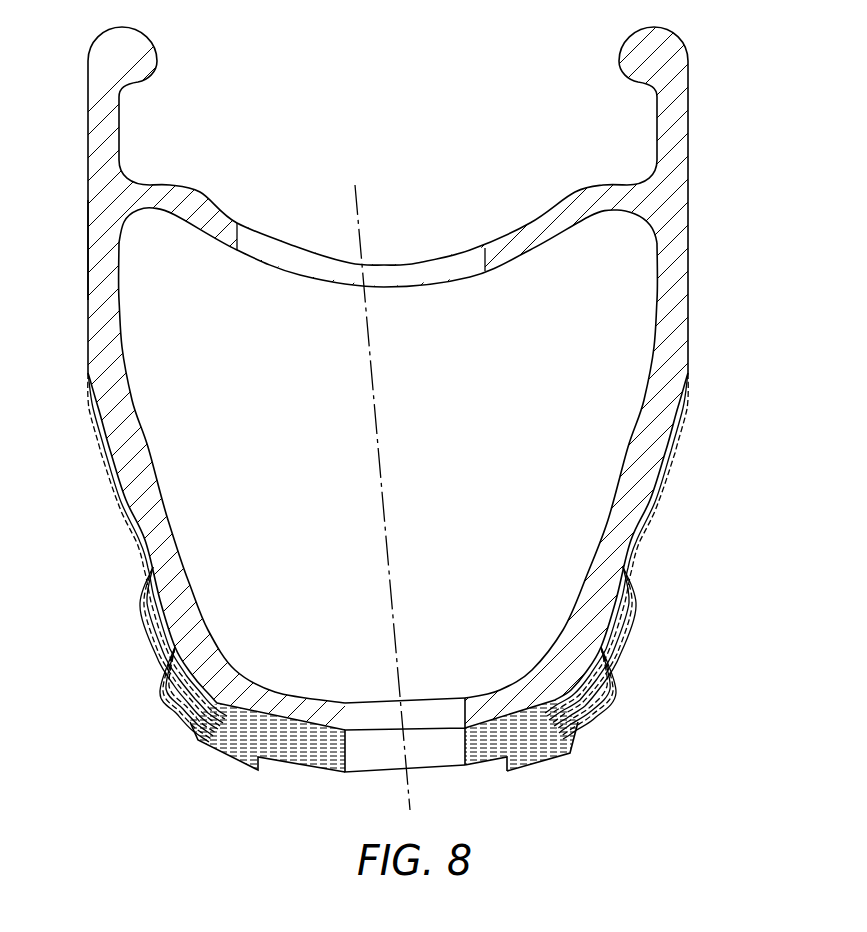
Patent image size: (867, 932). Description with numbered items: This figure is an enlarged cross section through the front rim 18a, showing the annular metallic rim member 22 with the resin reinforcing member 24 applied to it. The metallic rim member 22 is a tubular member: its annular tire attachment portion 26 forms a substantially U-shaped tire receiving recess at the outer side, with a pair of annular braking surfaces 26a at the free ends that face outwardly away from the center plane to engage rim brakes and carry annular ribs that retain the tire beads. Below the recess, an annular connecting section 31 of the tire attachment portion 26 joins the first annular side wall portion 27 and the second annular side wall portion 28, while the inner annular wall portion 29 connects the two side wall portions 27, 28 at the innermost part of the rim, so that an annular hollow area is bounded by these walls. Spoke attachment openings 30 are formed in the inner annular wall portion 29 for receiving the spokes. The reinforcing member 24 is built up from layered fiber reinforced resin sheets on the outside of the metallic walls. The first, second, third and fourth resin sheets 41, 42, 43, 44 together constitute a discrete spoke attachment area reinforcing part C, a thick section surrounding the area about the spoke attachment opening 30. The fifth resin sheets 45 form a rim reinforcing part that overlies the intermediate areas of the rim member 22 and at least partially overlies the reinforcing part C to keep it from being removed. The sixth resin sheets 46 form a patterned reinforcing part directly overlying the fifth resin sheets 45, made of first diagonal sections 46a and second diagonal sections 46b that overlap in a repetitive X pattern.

The rim 18a is at (762, 355).
The annular metallic rim member 22 is at (692, 152).
The resin reinforcing member 24 is at (704, 409).
The annular tire attachment portion 26 is at (120, 120).
The annular braking surfaces 26a is at (88, 264).
The first annular side wall portion 27 is at (150, 466).
The second annular side wall portion 28 is at (628, 448).
The inner annular wall portion 29 is at (331, 700).
The spoke attachment openings 30 is at (463, 715).
The annular connecting section 31 is at (522, 264).
The first resin sheets 41 is at (253, 712).
The second resin sheets 42 is at (487, 727).
The third resin sheets 43 is at (287, 740).
The fourth resin sheets 44 is at (301, 754).
The fifth resin sheets 45 is at (124, 518).
The sixth resin sheets 46 is at (607, 808).
The first diagonal sections 46a is at (568, 753).
The second diagonal sections 46b is at (530, 767).
The discrete spoke attachment area reinforcing parts C is at (266, 784).